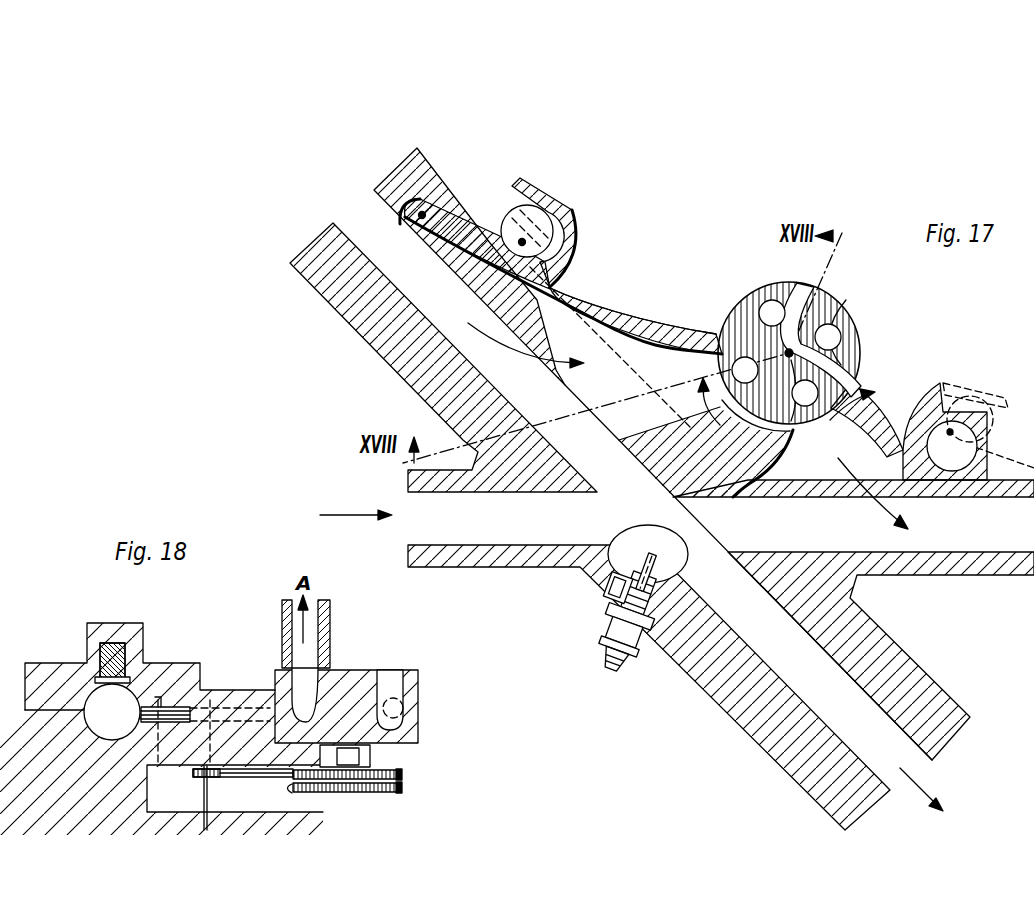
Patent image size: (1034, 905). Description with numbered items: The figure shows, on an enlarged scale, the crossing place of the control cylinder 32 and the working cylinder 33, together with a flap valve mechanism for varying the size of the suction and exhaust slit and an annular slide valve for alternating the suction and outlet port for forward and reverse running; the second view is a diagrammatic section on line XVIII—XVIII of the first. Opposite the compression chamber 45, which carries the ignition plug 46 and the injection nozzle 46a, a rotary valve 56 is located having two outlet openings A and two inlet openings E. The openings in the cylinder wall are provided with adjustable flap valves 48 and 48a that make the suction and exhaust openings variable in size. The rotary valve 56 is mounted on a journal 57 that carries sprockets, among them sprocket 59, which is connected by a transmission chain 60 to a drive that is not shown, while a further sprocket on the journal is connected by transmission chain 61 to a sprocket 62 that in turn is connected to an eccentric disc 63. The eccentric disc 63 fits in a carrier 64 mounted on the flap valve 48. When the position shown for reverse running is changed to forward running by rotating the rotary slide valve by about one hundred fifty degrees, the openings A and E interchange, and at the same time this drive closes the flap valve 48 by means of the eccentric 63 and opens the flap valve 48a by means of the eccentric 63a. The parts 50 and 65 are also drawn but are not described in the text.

In FIG. 17, the flap valve 48 is at (473, 233).
In FIG. 17, the carrier 64 is at (553, 208).
In FIG. 17, the eccentric disc 63 is at (545, 232).
In FIG. 17, the rotary valve 56 is at (862, 346).
In FIG. 18, the rotary valve 56 is at (355, 683).
In FIG. 17, the eccentric 63a is at (942, 437).
In FIG. 17, the flap valve 48a is at (1010, 487).
In FIG. 17, the outlet chamber 65 is at (828, 447).
In FIG. 17, the working cylinder 33 is at (468, 559).
In FIG. 17, the injection nozzle 46a is at (586, 591).
In FIG. 17, the ignition plug 46 is at (626, 672).
In FIG. 17, the compression chamber 45 is at (667, 588).
In FIG. 17, the control cylinder 32 is at (775, 737).
In FIG. 18, the journal 57 is at (372, 757).
In FIG. 18, the spring 50 is at (403, 774).
In FIG. 18, the sprocket 59 is at (403, 788).
In FIG. 18, the transmission chain 61 is at (256, 778).
In FIG. 18, the transmission chain 60 is at (290, 792).
In FIG. 18, the sprocket 62 is at (204, 781).